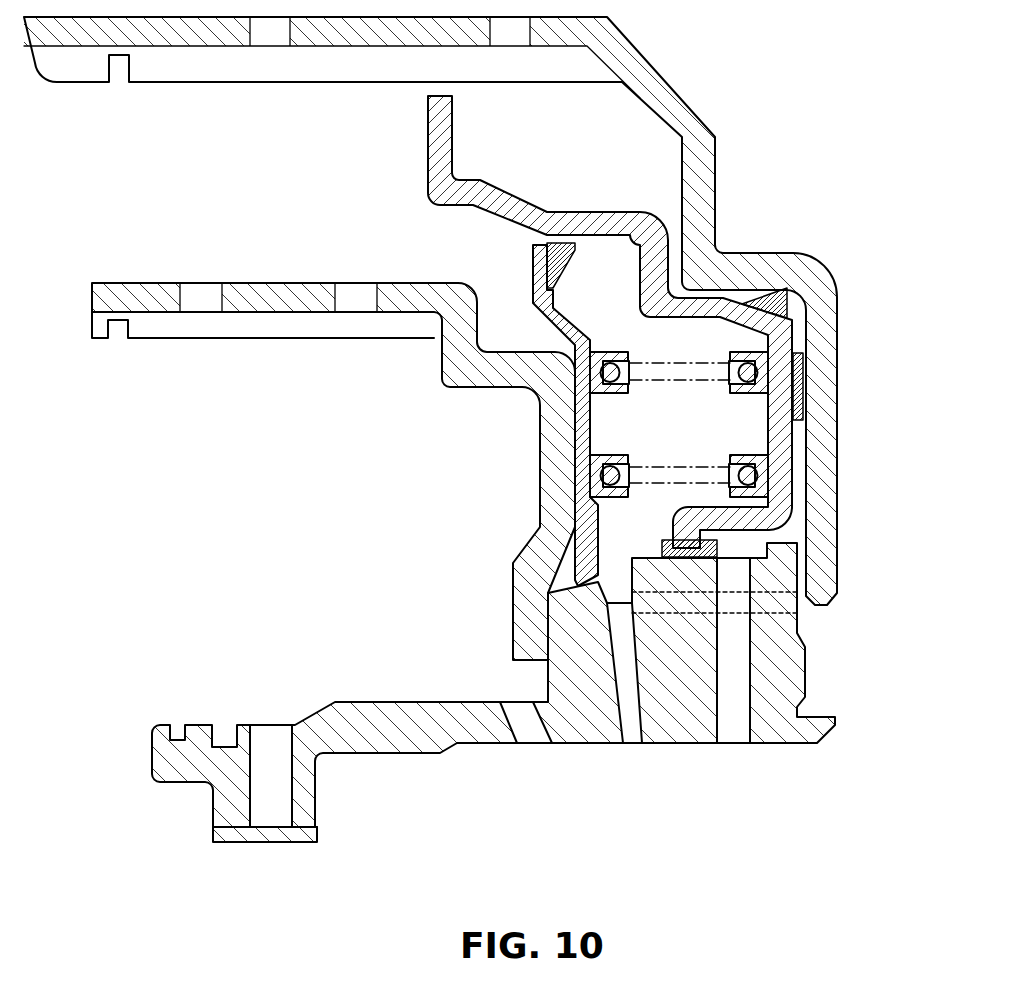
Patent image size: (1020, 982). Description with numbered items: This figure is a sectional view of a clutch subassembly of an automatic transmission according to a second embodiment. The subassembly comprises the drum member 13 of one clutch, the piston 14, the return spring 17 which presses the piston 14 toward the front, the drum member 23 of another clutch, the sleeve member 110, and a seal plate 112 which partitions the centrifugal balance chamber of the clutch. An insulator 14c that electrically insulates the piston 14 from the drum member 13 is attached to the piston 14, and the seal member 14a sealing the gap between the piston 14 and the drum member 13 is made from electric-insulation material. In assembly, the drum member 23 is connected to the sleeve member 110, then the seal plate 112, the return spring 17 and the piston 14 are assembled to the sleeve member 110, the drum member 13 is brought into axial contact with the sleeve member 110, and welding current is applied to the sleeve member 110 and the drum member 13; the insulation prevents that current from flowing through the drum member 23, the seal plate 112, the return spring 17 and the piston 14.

The drum member 13 is at (715, 170).
The piston 14 is at (453, 148).
The seal member 14a is at (785, 288).
The insulator 14c is at (798, 383).
The return spring 17 is at (677, 388).
The drum member 23 is at (290, 283).
The sleeve member 110 is at (667, 748).
The seal plate 112 is at (563, 310).